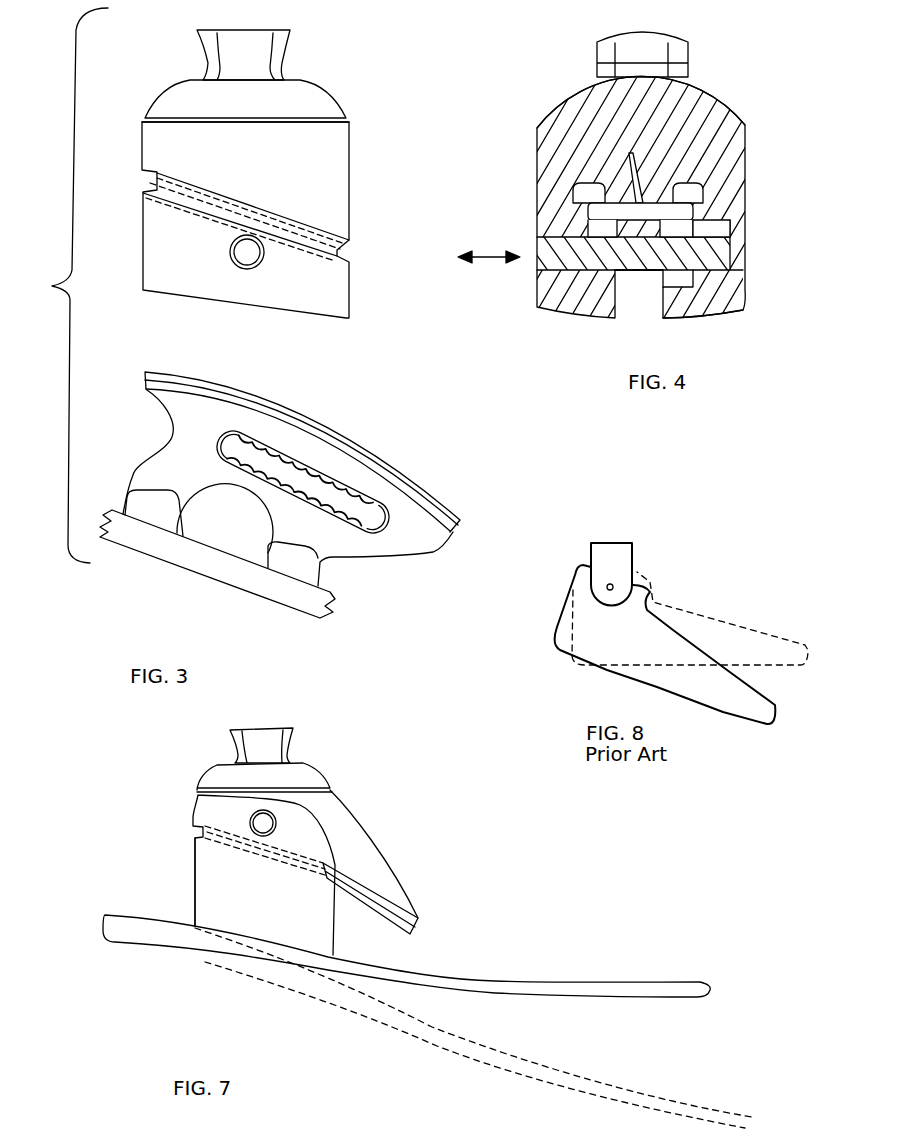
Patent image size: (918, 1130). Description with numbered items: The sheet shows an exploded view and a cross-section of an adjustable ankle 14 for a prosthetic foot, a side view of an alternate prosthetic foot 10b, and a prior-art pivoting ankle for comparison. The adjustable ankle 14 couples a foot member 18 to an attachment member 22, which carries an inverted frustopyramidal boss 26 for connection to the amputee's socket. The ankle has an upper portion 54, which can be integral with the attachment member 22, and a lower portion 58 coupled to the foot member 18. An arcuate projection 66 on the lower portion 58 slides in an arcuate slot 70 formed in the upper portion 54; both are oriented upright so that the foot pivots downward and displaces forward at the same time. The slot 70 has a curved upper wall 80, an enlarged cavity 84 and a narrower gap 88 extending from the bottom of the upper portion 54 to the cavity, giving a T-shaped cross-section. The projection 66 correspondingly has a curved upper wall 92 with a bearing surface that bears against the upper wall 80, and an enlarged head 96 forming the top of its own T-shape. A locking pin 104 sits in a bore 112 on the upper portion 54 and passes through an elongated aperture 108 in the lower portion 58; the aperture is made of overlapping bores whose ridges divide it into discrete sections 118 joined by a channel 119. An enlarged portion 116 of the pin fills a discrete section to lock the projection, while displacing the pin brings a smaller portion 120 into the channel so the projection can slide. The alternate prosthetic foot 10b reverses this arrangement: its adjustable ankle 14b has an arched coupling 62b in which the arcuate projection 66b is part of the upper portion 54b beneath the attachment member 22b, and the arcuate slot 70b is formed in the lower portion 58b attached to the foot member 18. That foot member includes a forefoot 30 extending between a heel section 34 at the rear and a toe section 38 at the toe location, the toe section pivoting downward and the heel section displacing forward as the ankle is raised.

In FIG. 7, the prosthetic foot 10b is at (487, 918).
In FIG. 3, the adjustable ankle 14 is at (68, 285).
In FIG. 7, the adjustable ankle 14b is at (443, 871).
In FIG. 3, the foot member 18 is at (155, 556).
In FIG. 7, the foot member 18 is at (567, 980).
In FIG. 3, the attachment member 22 is at (318, 95).
In FIG. 4, the attachment member 22 is at (560, 100).
In FIG. 7, the attachment member 22b is at (323, 772).
In FIG. 3, the inverted frustopyramidal boss 26 is at (285, 50).
In FIG. 4, the inverted frustopyramidal boss 26 is at (598, 62).
In FIG. 7, the inverted frustopyramidal boss 26 is at (293, 743).
In FIG. 7, the forefoot 30 is at (487, 980).
In FIG. 7, the heel section 34 is at (118, 942).
In FIG. 7, the toe section 38 is at (697, 982).
In FIG. 3, the upper portion 54 is at (349, 180).
In FIG. 4, the upper portion 54 is at (537, 150).
In FIG. 7, the upper portion 54b is at (348, 803).
In FIG. 3, the lower portion 58 is at (425, 557).
In FIG. 7, the lower portion 58b is at (193, 853).
In FIG. 7, the arched coupling 62b is at (178, 797).
In FIG. 3, the arcuate projection 66 is at (297, 412).
In FIG. 7, the arcuate projection 66b is at (370, 893).
In FIG. 3, the arcuate slot 70 is at (300, 212).
In FIG. 4, the arcuate slot 70 is at (631, 155).
In FIG. 7, the arcuate slot 70b is at (230, 858).
In FIG. 3, the upper wall 80 is at (180, 162).
In FIG. 4, the upper wall 80 is at (593, 183).
In FIG. 4, the enlarged cavity 84 is at (677, 200).
In FIG. 4, the narrower gap 88 is at (660, 295).
In FIG. 3, the upper wall 92 is at (178, 372).
In FIG. 3, the enlarged head 96 is at (430, 507).
In FIG. 3, the locking pin 104 is at (252, 258).
In FIG. 4, the locking pin 104 is at (730, 257).
In FIG. 3, the elongated aperture 108 is at (343, 477).
In FIG. 3, the bore 112 is at (232, 242).
In FIG. 4, the bore 112 is at (730, 230).
In FIG. 4, the enlarged portion 116 is at (560, 262).
In FIG. 3, the discrete sections 118 is at (236, 438).
In FIG. 3, the channel 119 is at (247, 447).
In FIG. 4, the smaller portion 120 is at (705, 260).